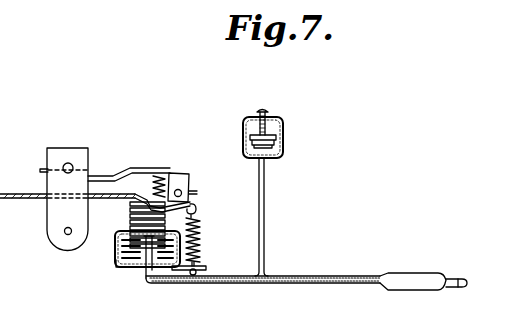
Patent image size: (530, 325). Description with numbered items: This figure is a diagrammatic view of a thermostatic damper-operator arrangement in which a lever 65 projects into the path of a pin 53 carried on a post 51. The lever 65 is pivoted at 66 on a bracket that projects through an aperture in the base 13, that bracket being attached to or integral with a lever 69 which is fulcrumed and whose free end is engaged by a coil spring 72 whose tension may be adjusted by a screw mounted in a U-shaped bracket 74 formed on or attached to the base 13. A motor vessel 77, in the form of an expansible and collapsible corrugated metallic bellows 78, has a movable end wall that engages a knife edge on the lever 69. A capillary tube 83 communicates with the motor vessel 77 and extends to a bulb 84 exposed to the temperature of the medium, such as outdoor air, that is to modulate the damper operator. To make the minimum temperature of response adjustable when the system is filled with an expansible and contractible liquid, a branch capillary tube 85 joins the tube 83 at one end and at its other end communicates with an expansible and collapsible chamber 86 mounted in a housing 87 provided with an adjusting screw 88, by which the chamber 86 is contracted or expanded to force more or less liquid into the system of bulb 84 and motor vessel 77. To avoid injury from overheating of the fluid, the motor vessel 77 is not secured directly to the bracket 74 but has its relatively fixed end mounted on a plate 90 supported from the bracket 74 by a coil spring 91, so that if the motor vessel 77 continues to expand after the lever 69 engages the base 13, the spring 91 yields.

The base 13 is at (20, 200).
The post 51 is at (78, 190).
The pin 53 is at (72, 162).
The lever 65 is at (158, 176).
The pivot 66 is at (189, 178).
The lever 69 is at (198, 210).
The coil spring 72 is at (200, 237).
The U-shaped bracket 74 is at (119, 268).
The motor vessel 77 is at (197, 202).
The bellows 78 is at (138, 214).
The capillary tube 83 is at (313, 278).
The bulb 84 is at (420, 278).
The branch capillary tube 85 is at (264, 222).
The expansible and collapsible chamber 86 is at (278, 141).
The housing 87 is at (283, 126).
The adjusting screw 88 is at (268, 112).
The plate 90 is at (117, 243).
The coil spring 91 is at (165, 245).